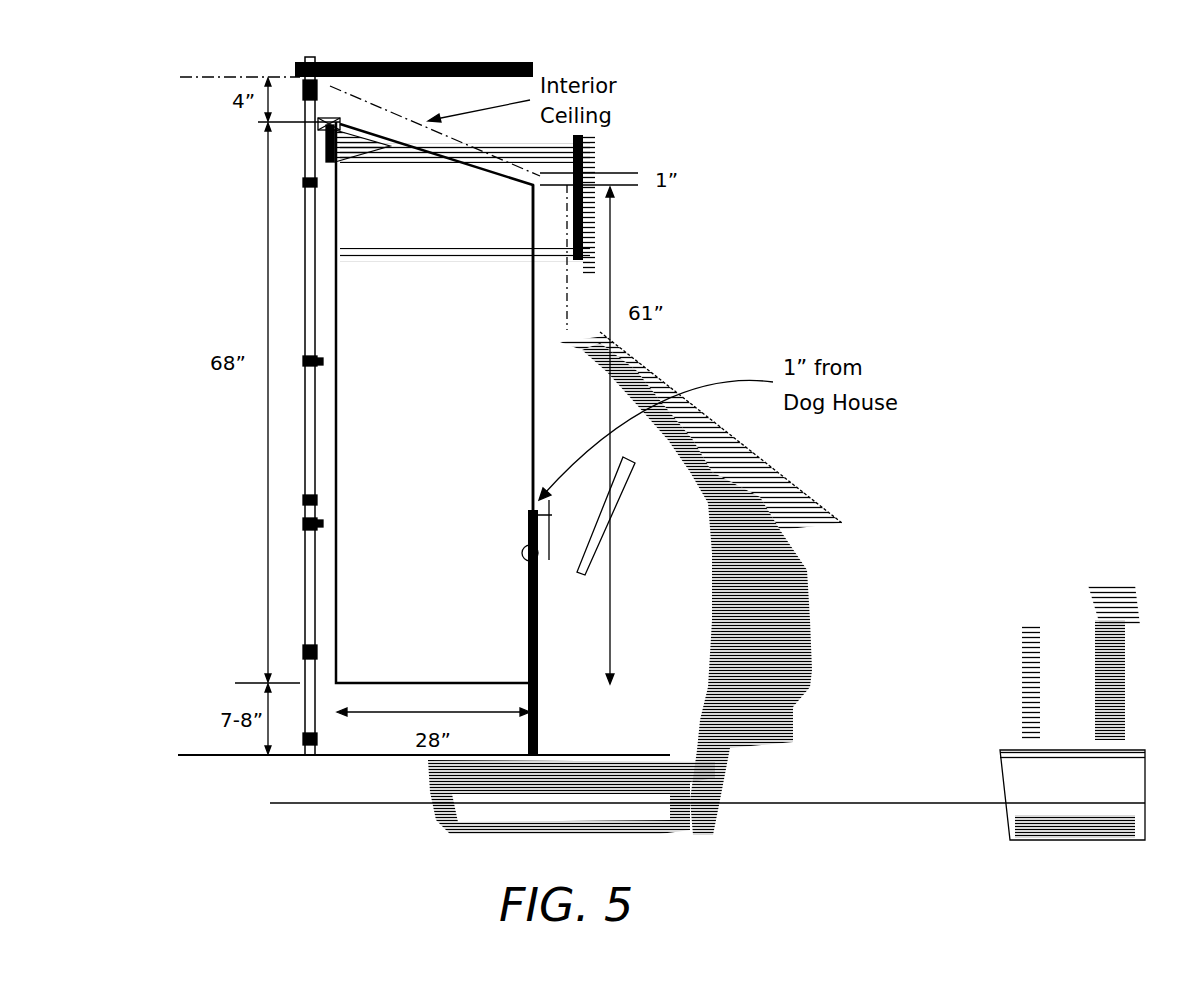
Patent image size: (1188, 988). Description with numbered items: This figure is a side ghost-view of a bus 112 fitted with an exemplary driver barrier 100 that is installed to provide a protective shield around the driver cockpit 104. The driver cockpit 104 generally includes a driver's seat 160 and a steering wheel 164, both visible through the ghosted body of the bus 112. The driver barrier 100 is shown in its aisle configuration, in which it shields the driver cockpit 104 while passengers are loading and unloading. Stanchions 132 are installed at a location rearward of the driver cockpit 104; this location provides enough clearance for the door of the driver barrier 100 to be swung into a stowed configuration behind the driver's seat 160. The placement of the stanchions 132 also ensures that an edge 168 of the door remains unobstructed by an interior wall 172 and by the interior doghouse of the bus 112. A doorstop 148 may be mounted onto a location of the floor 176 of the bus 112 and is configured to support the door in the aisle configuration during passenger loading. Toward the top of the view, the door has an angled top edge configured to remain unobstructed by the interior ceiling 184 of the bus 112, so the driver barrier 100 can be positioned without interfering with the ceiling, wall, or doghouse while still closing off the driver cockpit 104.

The driver barrier 100 is at (202, 293).
The driver cockpit 104 is at (696, 498).
The bus 112 is at (968, 570).
The stanchions 132 is at (310, 430).
The doorstop 148 is at (530, 693).
The driver's seat 160 is at (377, 590).
The steering wheel 164 is at (620, 500).
The edge 168 is at (535, 267).
The interior wall 172 is at (565, 212).
The floor 176 is at (358, 757).
The interior ceiling 184 is at (400, 115).